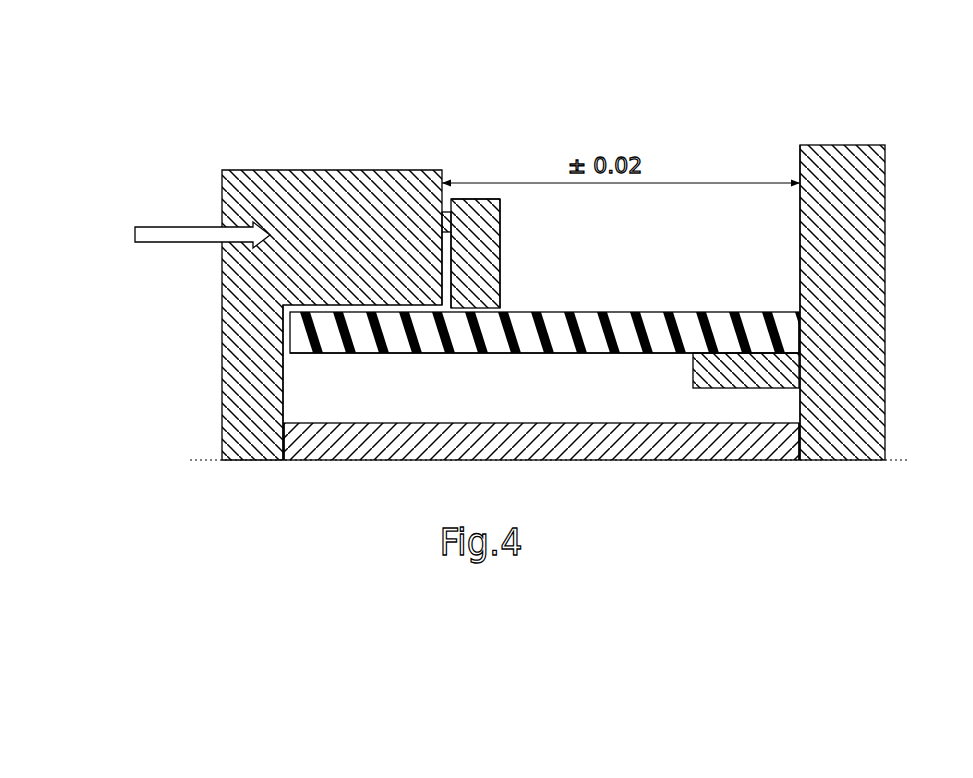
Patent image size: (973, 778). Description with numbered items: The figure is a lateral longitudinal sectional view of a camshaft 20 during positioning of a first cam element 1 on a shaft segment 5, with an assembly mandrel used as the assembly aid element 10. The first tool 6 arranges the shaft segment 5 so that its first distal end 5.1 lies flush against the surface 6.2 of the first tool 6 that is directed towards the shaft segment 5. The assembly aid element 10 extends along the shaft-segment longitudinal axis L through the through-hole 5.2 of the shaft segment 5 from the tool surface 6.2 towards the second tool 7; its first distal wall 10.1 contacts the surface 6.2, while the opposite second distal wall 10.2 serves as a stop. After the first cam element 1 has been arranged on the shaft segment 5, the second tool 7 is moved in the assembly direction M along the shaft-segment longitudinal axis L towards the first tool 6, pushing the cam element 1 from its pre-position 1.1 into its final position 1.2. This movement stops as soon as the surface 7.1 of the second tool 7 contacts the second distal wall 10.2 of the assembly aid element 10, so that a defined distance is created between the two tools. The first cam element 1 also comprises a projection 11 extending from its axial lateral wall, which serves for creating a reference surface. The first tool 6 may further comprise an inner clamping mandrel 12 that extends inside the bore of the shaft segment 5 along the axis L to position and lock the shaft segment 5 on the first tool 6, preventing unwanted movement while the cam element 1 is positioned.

The first cam element 1 is at (503, 292).
The pre-position 1.1 is at (492, 223).
The final position 1.2 is at (501, 247).
The shaft segment 5 is at (623, 311).
The first distal end 5.1 is at (802, 325).
The through-hole 5.2 is at (640, 388).
The first tool 6 is at (848, 145).
The surface of the first tool 6.2 is at (799, 228).
The second tool 7 is at (301, 170).
The surface of the second tool 7.1 is at (286, 386).
The assembly aid element 10 is at (362, 440).
The first distal wall 10.1 is at (801, 437).
The second distal wall 10.2 is at (282, 436).
The projection 11 is at (447, 183).
The inner clamping mandrel 12 is at (760, 362).
The camshaft 20 is at (645, 92).
The assembly direction M is at (208, 230).
The shaft-segment longitudinal axis L is at (198, 459).